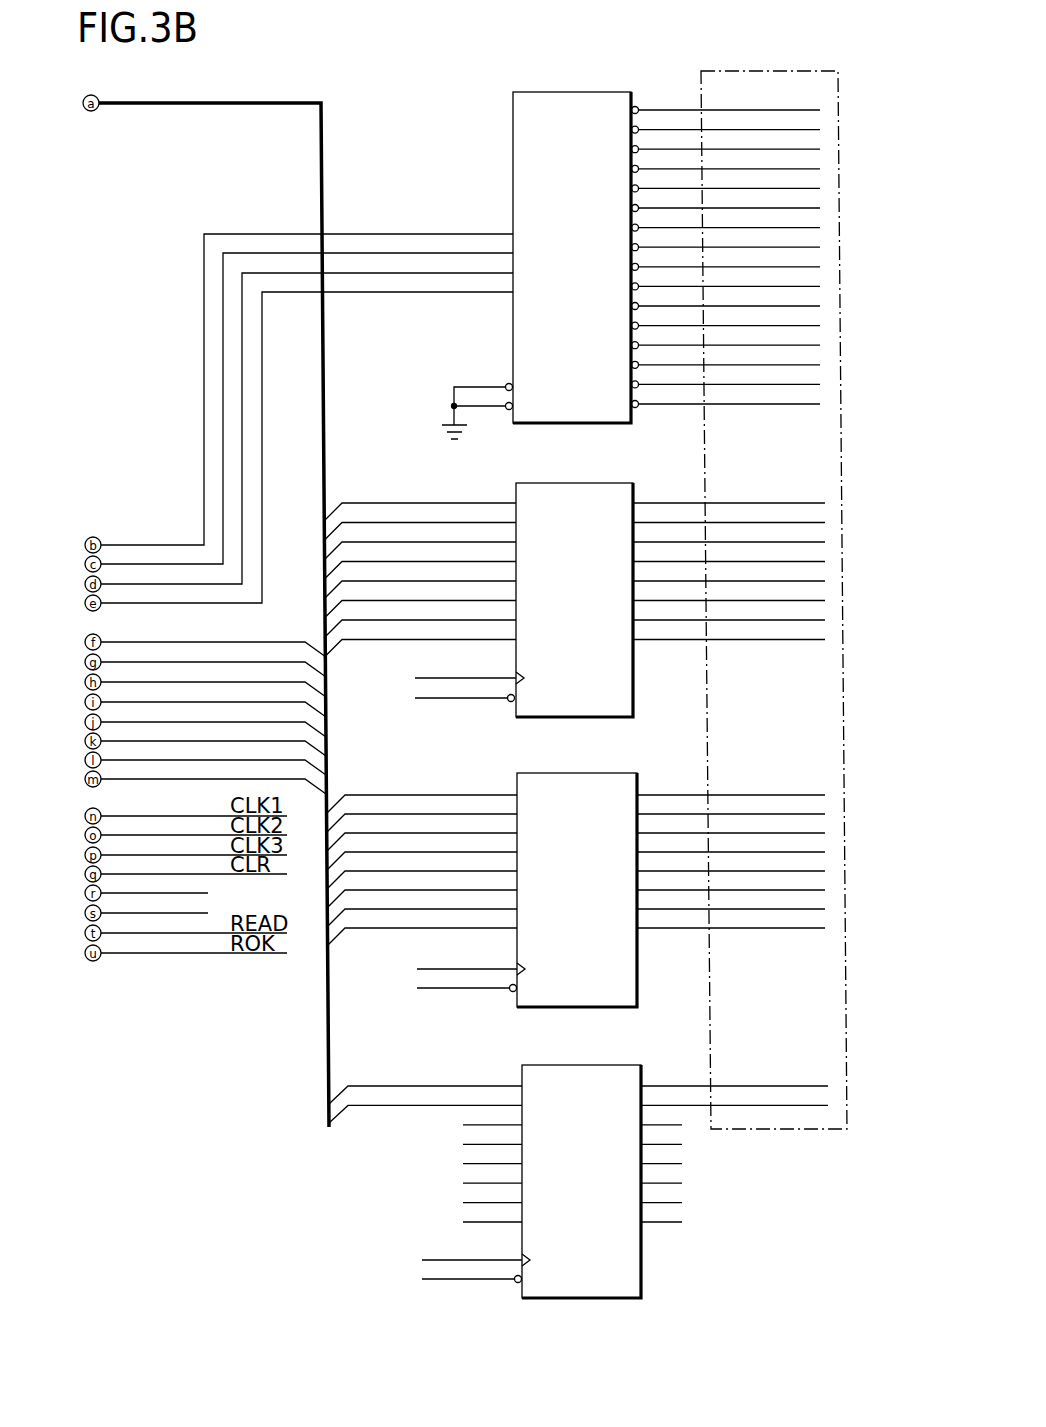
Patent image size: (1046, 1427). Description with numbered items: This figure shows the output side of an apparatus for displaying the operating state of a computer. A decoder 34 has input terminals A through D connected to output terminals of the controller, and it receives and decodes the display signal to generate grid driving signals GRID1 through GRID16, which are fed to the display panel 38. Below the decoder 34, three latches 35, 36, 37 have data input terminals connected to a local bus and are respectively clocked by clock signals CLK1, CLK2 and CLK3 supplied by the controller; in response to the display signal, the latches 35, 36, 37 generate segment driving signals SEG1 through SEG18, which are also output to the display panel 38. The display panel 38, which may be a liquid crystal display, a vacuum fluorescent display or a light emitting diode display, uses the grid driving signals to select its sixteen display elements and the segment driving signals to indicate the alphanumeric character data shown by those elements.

The decoder 34 is at (581, 92).
The latch 35 is at (582, 483).
The latch 36 is at (585, 773).
The latch 37 is at (588, 1065).
The display panel 38 is at (770, 69).